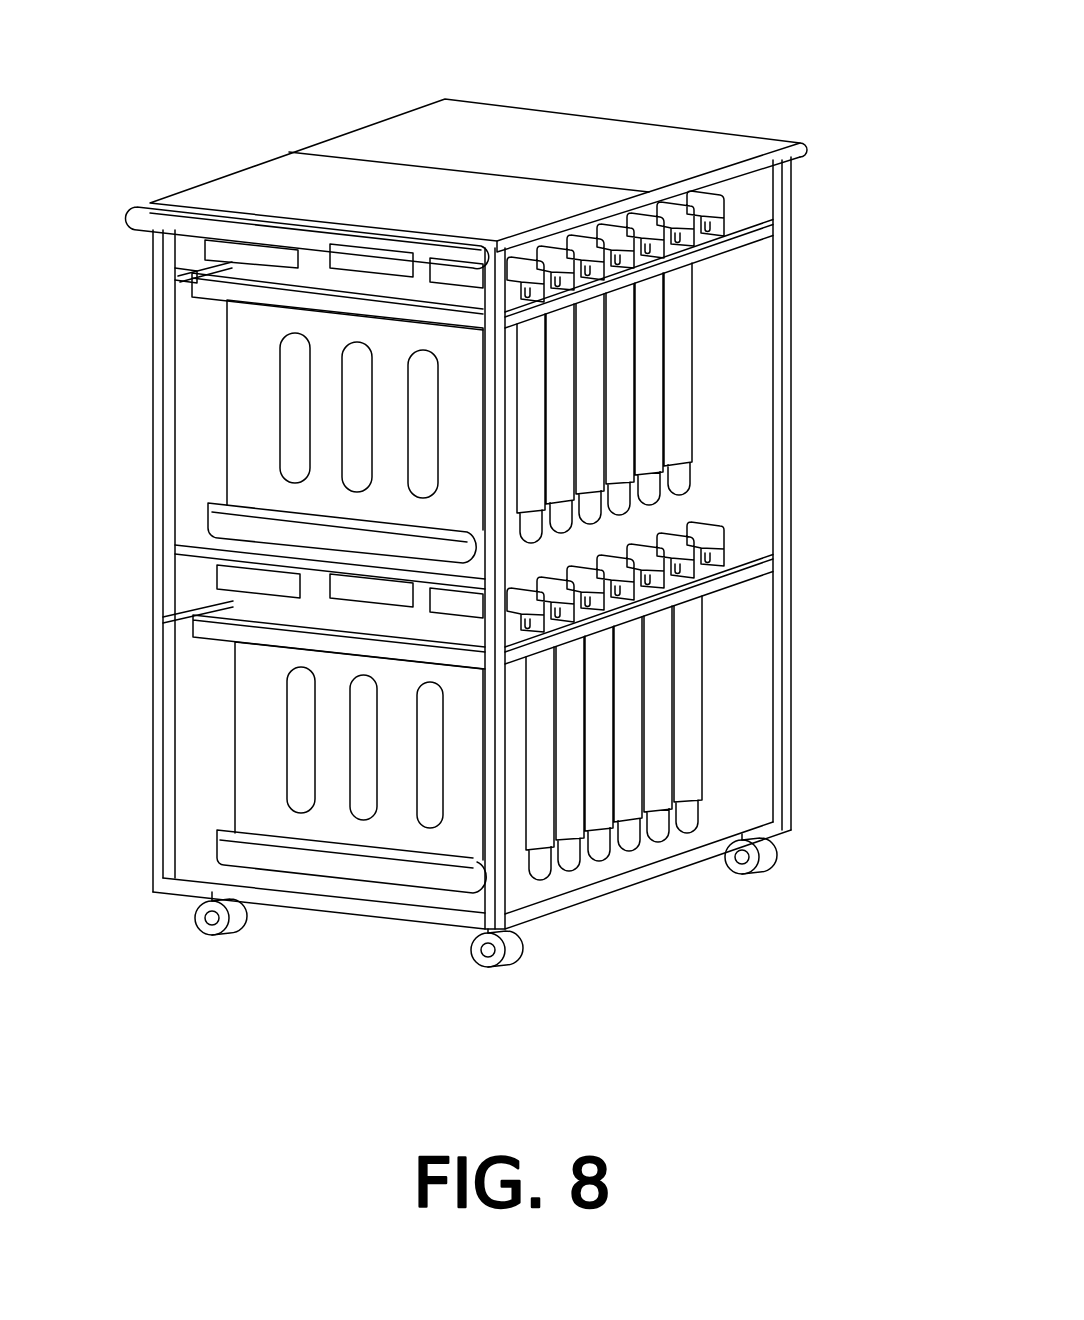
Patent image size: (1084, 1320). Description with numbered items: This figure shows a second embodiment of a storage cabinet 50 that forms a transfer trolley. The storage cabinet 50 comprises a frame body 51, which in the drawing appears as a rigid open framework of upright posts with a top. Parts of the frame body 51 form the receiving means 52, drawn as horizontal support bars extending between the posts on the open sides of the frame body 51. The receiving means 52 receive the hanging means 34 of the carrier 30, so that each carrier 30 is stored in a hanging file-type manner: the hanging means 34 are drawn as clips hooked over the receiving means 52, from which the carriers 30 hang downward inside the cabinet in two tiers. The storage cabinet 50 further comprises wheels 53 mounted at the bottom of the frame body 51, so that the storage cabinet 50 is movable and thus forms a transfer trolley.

The storage cabinet 50 is at (810, 78).
The frame body 51 is at (792, 392).
The receiving means 52 is at (750, 237).
The wheels 53 is at (770, 862).
The carrier 30 is at (250, 418).
The hanging means 34 is at (220, 593).